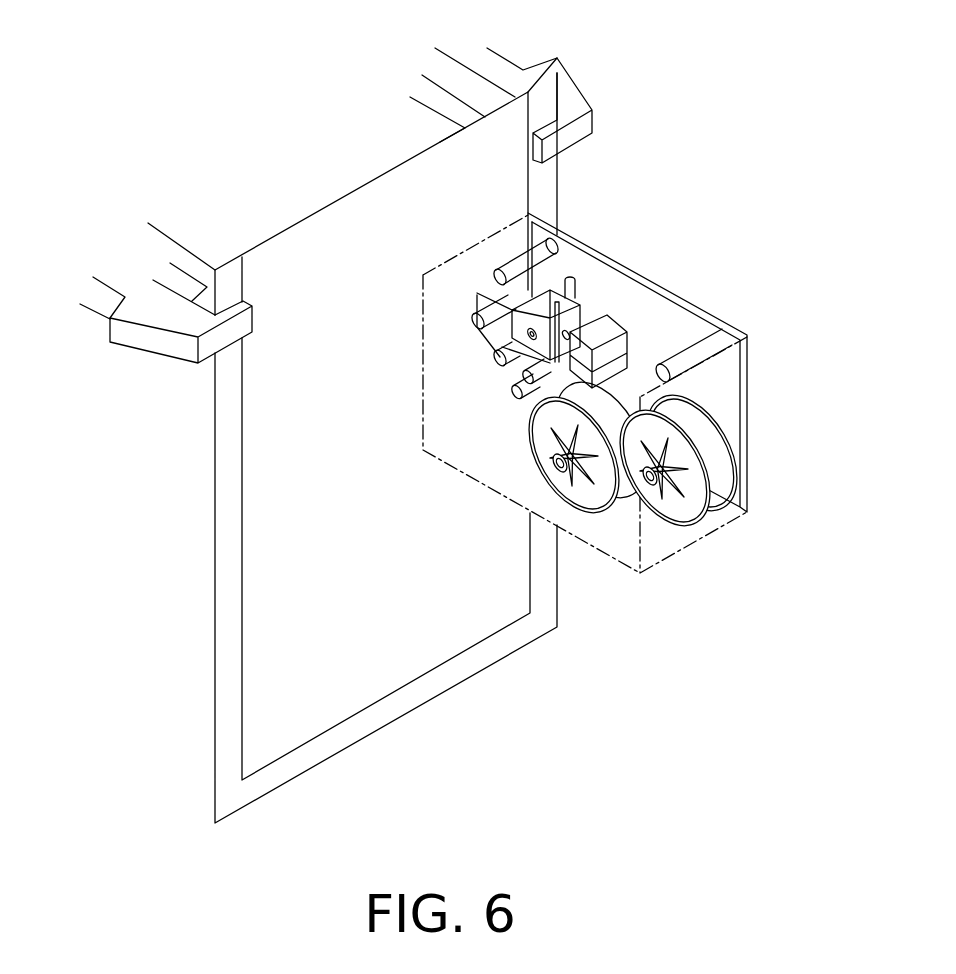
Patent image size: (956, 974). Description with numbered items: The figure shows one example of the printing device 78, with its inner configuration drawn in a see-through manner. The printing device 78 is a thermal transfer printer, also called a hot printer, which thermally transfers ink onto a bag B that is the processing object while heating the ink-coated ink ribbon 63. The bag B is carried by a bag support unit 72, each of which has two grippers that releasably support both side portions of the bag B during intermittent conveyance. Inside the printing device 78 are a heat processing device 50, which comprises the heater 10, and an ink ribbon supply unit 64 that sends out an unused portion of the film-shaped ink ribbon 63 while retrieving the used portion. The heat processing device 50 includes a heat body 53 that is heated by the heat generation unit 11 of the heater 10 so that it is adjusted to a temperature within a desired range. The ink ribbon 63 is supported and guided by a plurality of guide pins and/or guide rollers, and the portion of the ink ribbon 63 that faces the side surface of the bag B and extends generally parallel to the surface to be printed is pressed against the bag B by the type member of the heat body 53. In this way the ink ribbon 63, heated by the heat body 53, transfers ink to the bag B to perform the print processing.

The bag B is at (215, 680).
The bag support unit 72 is at (568, 115).
The ink ribbon 63 is at (480, 316).
The heat generation unit 11 is at (530, 326).
The heat body 53 is at (562, 279).
The heat processing device 50 is at (585, 392).
The heater 10 is at (575, 290).
The printing device 78 is at (702, 309).
The ink ribbon supply unit 64 is at (663, 510).